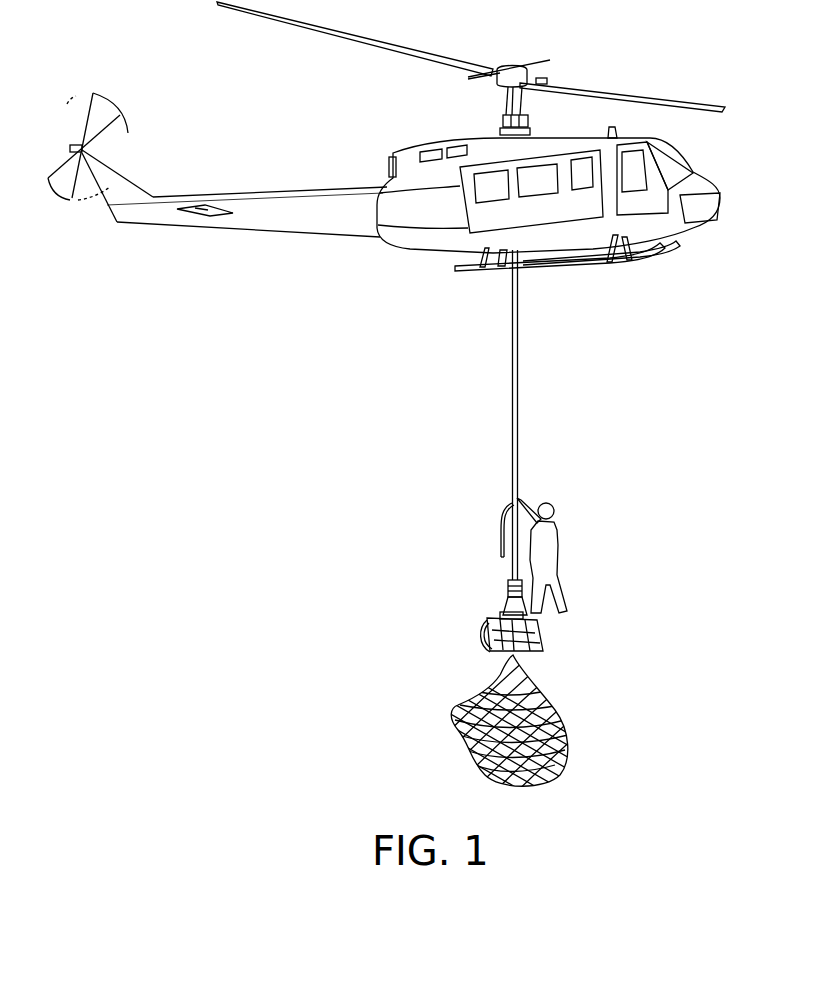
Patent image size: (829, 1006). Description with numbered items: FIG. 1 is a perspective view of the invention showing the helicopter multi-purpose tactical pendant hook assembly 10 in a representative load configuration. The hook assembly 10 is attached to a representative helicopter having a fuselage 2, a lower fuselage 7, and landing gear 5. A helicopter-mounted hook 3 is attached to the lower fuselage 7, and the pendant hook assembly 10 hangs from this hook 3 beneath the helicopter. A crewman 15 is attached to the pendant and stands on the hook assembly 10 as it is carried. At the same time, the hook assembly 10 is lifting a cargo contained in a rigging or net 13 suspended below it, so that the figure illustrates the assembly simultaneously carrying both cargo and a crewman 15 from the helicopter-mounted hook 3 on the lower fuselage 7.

The fuselage 2 is at (252, 222).
The lower fuselage 7 is at (407, 248).
The landing gear 5 is at (617, 268).
The helicopter-mounted hook 3 is at (513, 258).
The crewman 15 is at (558, 520).
The helicopter multi-purpose tactical pendant hook assembly 10 is at (577, 637).
The rigging or net 13 is at (500, 692).